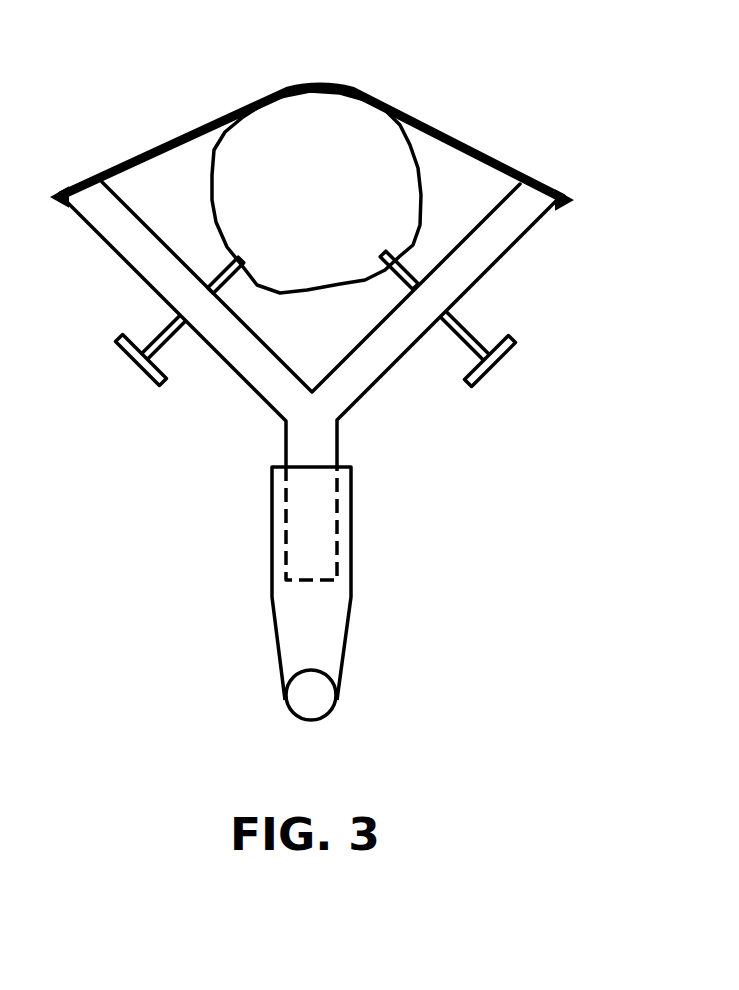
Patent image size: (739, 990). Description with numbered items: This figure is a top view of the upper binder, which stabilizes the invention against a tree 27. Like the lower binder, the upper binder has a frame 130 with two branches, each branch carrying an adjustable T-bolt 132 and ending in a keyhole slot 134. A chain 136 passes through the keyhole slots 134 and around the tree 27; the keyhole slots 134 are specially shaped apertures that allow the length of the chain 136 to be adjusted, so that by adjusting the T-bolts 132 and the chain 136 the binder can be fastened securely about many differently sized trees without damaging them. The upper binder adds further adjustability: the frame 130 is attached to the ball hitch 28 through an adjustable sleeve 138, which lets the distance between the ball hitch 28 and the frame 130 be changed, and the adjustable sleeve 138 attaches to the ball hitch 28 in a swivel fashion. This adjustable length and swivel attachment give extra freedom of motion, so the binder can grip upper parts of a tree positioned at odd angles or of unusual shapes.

The tree 27 is at (316, 192).
The ball hitch 28 is at (339, 696).
The frame 130 is at (512, 246).
The T-bolts 132 is at (131, 369).
The keyhole slots 134 is at (89, 186).
The chain 136 is at (167, 146).
The adjustable sleeve 138 is at (354, 555).